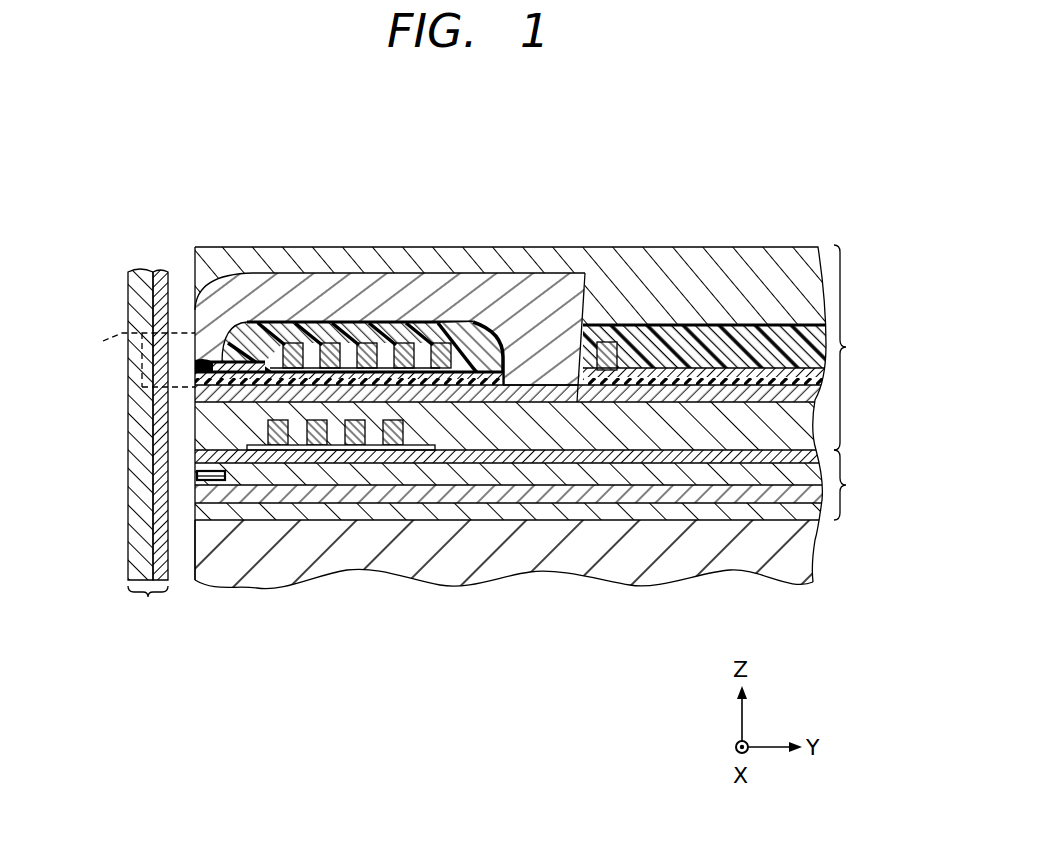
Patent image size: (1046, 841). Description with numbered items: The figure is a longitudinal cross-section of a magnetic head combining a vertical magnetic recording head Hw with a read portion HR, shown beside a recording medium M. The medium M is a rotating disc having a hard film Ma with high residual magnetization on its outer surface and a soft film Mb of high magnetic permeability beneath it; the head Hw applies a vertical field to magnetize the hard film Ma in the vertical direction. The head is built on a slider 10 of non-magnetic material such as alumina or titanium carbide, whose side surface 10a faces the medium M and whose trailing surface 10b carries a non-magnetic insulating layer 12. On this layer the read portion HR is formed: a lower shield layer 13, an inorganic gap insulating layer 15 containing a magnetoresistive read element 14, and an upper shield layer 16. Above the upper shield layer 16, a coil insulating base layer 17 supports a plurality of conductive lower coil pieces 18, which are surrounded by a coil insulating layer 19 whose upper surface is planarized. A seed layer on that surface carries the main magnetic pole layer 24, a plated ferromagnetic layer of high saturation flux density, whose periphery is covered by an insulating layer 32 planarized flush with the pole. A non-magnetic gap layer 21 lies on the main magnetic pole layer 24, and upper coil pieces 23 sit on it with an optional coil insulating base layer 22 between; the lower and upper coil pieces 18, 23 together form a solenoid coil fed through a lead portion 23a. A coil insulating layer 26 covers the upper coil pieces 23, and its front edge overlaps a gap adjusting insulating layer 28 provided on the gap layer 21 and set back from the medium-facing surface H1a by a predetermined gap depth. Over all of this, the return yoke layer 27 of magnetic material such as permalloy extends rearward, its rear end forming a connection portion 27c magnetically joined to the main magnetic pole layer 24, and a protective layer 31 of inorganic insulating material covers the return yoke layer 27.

The slider 10 is at (677, 570).
The side surface 10a is at (203, 565).
The trailing surface 10b is at (467, 522).
The non-magnetic insulating layer 12 is at (203, 513).
The lower shield layer 13 is at (203, 498).
The read element 14 is at (198, 480).
The inorganic insulating layer 15 is at (594, 485).
The upper shield layer 16 is at (197, 458).
The coil insulating base layer 17 is at (352, 450).
The lower coil pieces 18 is at (300, 400).
The coil insulating layer 19 is at (197, 437).
The gap layer 21 is at (195, 380).
The coil insulating base layer 22 is at (440, 337).
The upper coil pieces 23 is at (368, 324).
The lead portion 23a is at (607, 352).
The main magnetic pole layer 24 is at (197, 396).
The coil insulating layer 26 is at (273, 323).
The return yoke layer 27 is at (421, 283).
The connection portion 27c is at (543, 383).
The gap adjusting insulating layer 28 is at (213, 360).
The protective layer 31 is at (337, 254).
The insulating layer 32 is at (818, 392).
The soft film Mb is at (140, 276).
The hard film Ma is at (160, 278).
The recording medium M is at (148, 605).
The surface facing a recording medium H1a is at (195, 322).
The vertical magnetic recording head Hw is at (861, 347).
The read portion HR is at (859, 485).